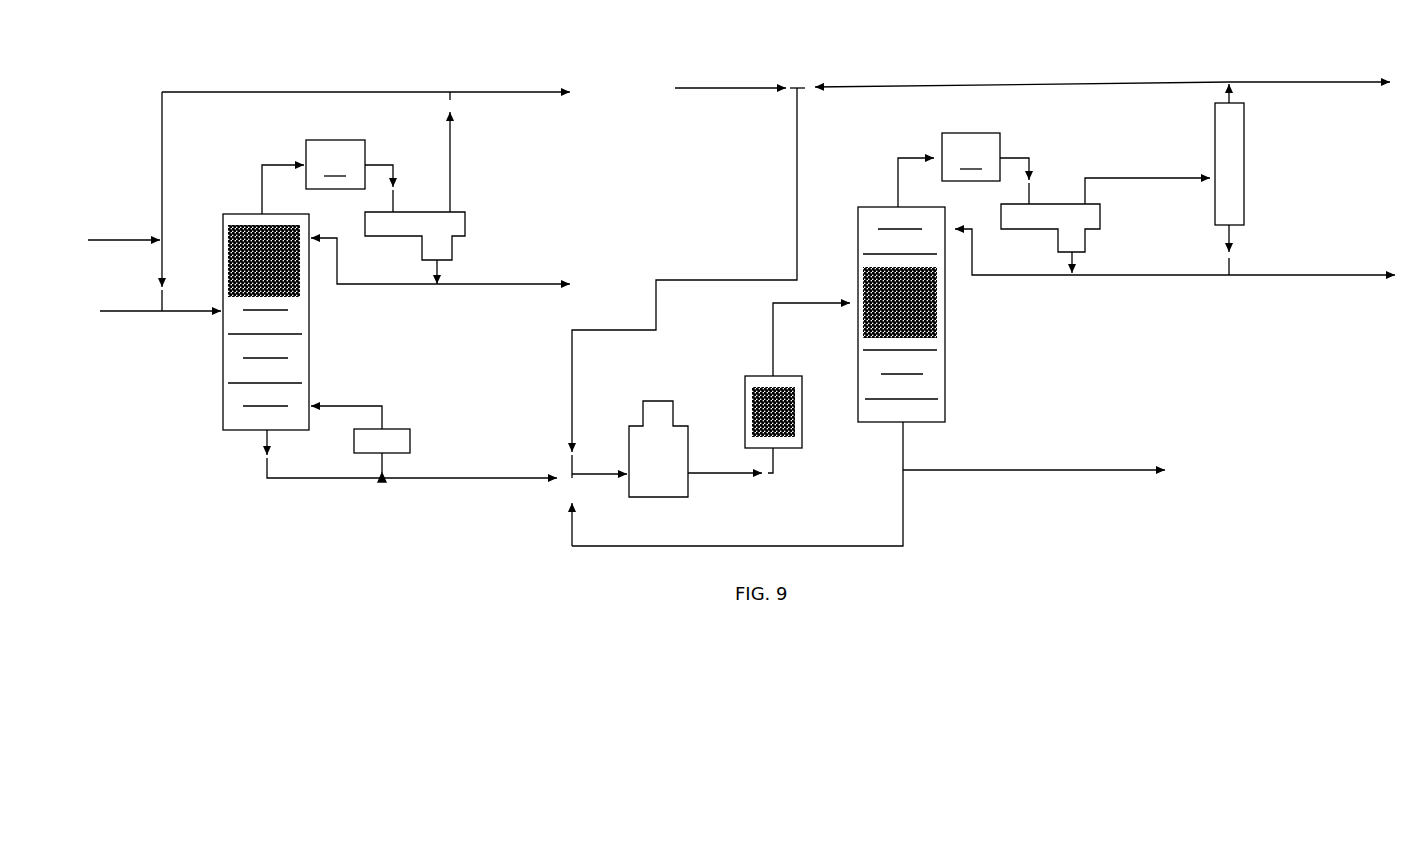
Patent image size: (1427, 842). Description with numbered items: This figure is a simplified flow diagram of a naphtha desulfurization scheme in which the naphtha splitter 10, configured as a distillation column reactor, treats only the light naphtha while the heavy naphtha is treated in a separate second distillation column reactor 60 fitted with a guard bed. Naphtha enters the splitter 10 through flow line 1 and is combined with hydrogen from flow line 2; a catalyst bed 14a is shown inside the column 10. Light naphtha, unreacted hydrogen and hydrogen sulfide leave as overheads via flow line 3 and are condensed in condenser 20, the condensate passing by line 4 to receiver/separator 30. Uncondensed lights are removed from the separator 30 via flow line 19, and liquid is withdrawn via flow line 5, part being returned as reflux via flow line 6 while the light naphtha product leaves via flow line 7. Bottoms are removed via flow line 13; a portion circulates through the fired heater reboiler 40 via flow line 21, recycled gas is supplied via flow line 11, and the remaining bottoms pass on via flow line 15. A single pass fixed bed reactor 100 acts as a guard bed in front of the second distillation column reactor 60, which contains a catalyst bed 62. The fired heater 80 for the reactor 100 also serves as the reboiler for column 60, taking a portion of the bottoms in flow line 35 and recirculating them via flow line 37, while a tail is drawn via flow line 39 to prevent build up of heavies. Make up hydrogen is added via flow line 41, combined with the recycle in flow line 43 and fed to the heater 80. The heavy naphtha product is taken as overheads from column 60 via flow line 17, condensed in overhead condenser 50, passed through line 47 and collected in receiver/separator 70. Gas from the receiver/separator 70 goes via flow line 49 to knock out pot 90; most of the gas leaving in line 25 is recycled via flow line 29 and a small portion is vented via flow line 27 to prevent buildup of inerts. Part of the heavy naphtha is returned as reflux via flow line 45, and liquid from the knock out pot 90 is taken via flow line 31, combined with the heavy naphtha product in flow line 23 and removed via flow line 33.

The flow line 1 is at (103, 295).
The flow line 2 is at (102, 270).
The flow line 3 is at (263, 163).
The condensed overhead line 4 is at (396, 173).
The flow line 5 is at (437, 272).
The flow line 6 is at (380, 284).
The flow line 7 is at (533, 263).
The naphtha splitter 10 is at (222, 214).
The flow line 11 is at (355, 92).
The flow line 13 is at (297, 479).
The catalyst bed 14a is at (243, 248).
The flow line 15 is at (502, 480).
The flow line 17 is at (902, 156).
The flow line 19 is at (453, 169).
The condenser 20 is at (335, 164).
The flow line 21 is at (386, 460).
The flow line 23 is at (1140, 278).
The line 25 is at (1222, 100).
The flow line 27 is at (1304, 62).
The flow line 29 is at (1060, 85).
The receiver/separator 30 is at (462, 226).
The flow line 31 is at (1232, 249).
The flow line 33 is at (1322, 258).
The flow line 35 is at (903, 451).
The flow line 37 is at (816, 548).
The flow line 39 is at (968, 490).
The fired heater reboiler 40 is at (410, 434).
The flow line 41 is at (722, 118).
The flow line 43 is at (790, 158).
The flow line 45 is at (1010, 278).
The condensed overhead line 47 is at (1031, 175).
The flow line 49 is at (1111, 178).
The overhead condenser 50 is at (971, 157).
The second distillation column reactor 60 is at (870, 207).
The catalyst bed 62 is at (890, 296).
The receiver/separator 70 is at (1088, 225).
The fired heater 80 is at (683, 483).
The knock out pot 90 is at (1215, 134).
The fixed bed reactor 100 is at (750, 380).